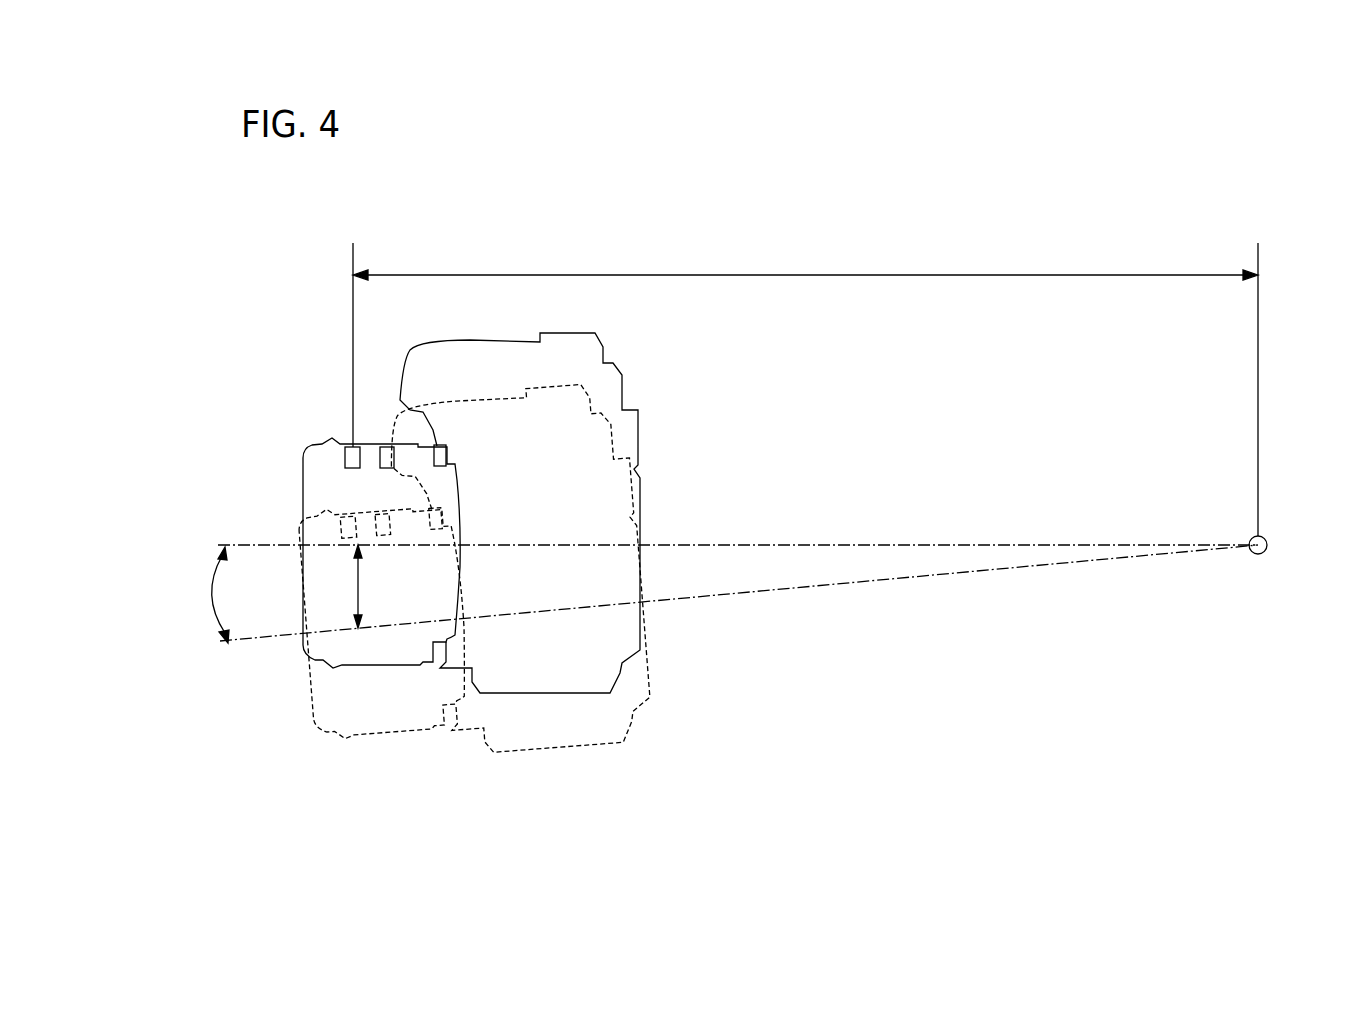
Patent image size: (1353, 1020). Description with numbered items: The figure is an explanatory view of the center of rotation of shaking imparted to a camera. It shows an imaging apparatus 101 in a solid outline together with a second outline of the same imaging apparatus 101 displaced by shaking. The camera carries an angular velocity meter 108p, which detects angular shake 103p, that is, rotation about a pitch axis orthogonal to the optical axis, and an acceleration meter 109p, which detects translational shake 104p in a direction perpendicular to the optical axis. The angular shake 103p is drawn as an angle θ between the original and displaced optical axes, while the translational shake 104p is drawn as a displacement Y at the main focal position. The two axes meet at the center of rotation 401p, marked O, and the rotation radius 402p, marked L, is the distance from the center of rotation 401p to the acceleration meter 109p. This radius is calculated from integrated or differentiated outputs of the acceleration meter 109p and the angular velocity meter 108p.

The imaging apparatus 101 is at (620, 370).
The angular shake 103p is at (213, 588).
The translational shake 104p is at (356, 583).
The angular velocity meter 108p is at (393, 468).
The acceleration meter 109p is at (345, 458).
The center of rotation 401p is at (1258, 555).
The rotation radius 402p is at (803, 275).